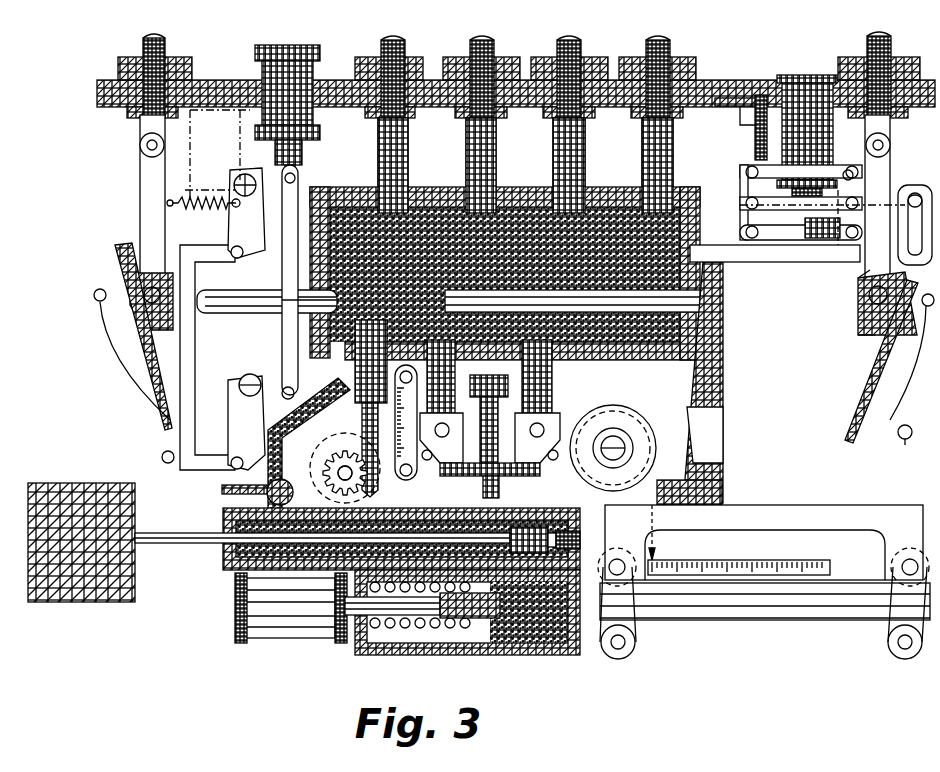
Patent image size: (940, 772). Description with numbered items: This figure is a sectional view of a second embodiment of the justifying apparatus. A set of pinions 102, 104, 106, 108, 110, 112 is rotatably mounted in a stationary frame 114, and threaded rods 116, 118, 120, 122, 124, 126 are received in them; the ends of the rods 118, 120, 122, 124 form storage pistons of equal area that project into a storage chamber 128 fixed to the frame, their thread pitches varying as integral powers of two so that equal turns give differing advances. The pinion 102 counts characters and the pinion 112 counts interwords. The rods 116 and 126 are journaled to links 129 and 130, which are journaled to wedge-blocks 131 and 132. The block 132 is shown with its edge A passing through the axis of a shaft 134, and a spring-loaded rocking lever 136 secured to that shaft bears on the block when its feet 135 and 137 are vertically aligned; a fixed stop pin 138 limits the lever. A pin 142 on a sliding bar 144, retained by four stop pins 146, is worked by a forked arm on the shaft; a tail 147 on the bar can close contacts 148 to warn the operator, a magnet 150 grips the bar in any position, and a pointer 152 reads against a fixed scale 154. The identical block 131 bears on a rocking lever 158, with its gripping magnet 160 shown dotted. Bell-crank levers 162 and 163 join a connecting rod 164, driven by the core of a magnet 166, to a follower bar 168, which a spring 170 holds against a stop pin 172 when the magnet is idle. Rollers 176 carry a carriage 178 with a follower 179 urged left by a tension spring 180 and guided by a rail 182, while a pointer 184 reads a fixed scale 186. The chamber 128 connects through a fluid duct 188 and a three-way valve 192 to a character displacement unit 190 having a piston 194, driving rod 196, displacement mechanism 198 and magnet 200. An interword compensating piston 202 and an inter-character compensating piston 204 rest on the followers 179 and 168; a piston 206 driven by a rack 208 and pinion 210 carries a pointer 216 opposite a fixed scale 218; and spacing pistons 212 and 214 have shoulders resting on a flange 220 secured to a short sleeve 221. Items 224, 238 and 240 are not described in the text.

The pinion 102 is at (132, 63).
The pinion 104 is at (370, 62).
The pinion 106 is at (459, 62).
The pinion 108 is at (545, 62).
The pinion 110 is at (632, 62).
The pinion 112 is at (898, 60).
The stationary frame 114 is at (752, 85).
The threaded rod 116 is at (165, 47).
The threaded rod 118 is at (390, 40).
The threaded rod 120 is at (480, 40).
The threaded rod 122 is at (568, 40).
The threaded rod 124 is at (660, 40).
The threaded rod 126 is at (867, 45).
The storage chamber 128 is at (700, 208).
The link 129 is at (140, 172).
The link 130 is at (890, 158).
The wedge-block 131 is at (158, 330).
The wedge-block 132 is at (868, 298).
The shaft 134 is at (925, 292).
The foot 135 is at (860, 273).
The spring-loaded rocking lever 136 is at (878, 392).
The foot 137 is at (858, 328).
The fixed stop pin 138 is at (904, 445).
The pin 142 is at (915, 190).
The sliding bar 144 is at (801, 206).
The stop pins 146 is at (848, 172).
The tail 147 is at (740, 172).
The contacts 148 is at (757, 160).
The magnet 150 is at (800, 80).
The pointer 152 is at (822, 225).
The fixed scale 154 is at (775, 230).
The rocking lever 158 is at (152, 398).
The gripping magnet 160 is at (235, 155).
The bell-crank lever 162 is at (244, 256).
The bell-crank lever 163 is at (235, 420).
The connecting rod 164 is at (282, 283).
The magnet 166 is at (288, 55).
The follower bar 168 is at (196, 330).
The spring 170 is at (202, 208).
The fixed stop pin 172 is at (165, 453).
The rollers 176 is at (616, 548).
The carriage 178 is at (800, 508).
The follower 179 is at (725, 386).
The tension spring 180 is at (632, 425).
The rail 182 is at (755, 262).
The pointer 184 is at (660, 545).
The fixed scale 186 is at (780, 560).
The fluid duct 188 is at (293, 448).
The character displacement unit 190 is at (575, 652).
The three-way valve 192 is at (284, 480).
The piston 194 is at (505, 540).
The driving rod 196 is at (190, 543).
The character displacement mechanism 198 is at (80, 600).
The magnet 200 is at (295, 628).
The interword compensating piston 202 is at (508, 296).
The inter-character compensating piston 204 is at (340, 290).
The piston 206 is at (370, 320).
The rack 208 is at (345, 468).
The pinion 210 is at (347, 480).
The spacing piston 212 is at (445, 346).
The spacing piston 214 is at (545, 346).
The pointer 216 is at (393, 420).
The fixed scale 218 is at (462, 470).
The flange 220 is at (512, 478).
The short sleeve 221 is at (500, 492).
The bolt 224 is at (500, 412).
The block 238 is at (428, 462).
The hub 240 is at (600, 455).
The edge A is at (931, 280).